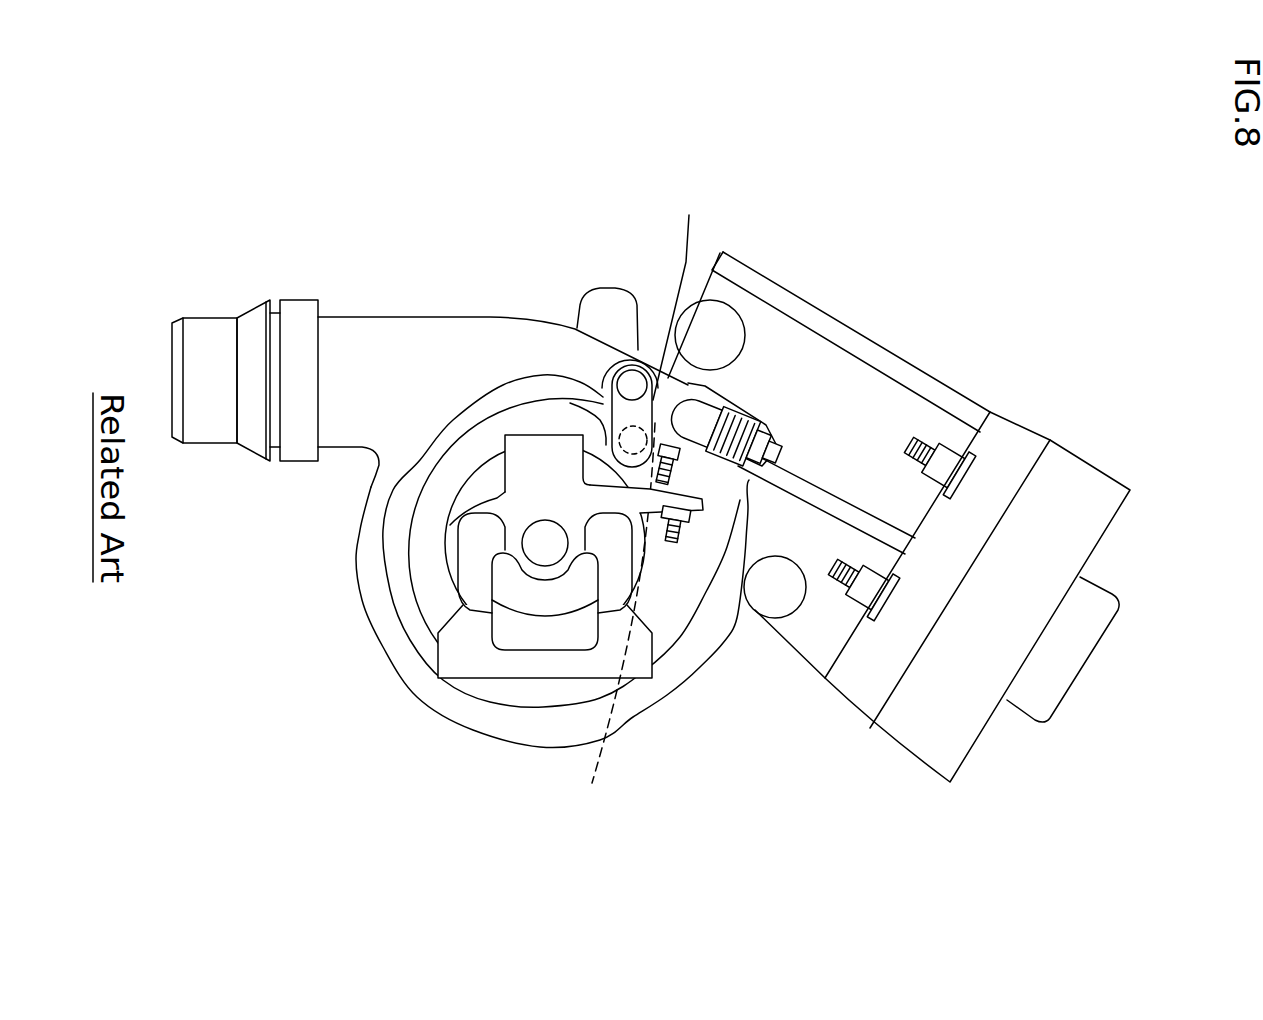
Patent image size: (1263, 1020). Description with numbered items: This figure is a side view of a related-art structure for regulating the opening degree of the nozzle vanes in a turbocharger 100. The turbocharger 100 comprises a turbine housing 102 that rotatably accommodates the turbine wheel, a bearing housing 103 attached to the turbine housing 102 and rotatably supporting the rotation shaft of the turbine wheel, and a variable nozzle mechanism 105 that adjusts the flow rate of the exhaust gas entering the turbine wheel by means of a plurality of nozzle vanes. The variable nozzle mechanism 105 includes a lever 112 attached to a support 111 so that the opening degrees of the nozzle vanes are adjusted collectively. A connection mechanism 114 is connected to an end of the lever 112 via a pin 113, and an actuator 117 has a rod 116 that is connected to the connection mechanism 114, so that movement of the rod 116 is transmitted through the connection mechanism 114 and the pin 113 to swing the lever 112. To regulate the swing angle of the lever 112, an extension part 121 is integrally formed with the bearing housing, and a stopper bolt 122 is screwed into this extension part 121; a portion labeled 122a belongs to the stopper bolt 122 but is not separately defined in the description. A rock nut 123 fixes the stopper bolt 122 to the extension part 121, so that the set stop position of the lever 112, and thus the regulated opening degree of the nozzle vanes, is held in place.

The turbocharger 100 is at (349, 208).
The turbine housing 102 is at (496, 328).
The bearing housing 103 is at (407, 594).
The variable nozzle mechanism 105 is at (948, 253).
The support 111 is at (546, 617).
The lever 112 is at (597, 385).
The pin 113 is at (642, 362).
The connection mechanism 114 is at (692, 378).
The rod 116 is at (843, 510).
The actuator 117 is at (1135, 544).
The extension part 121 is at (700, 456).
The stopper bolt 122 is at (688, 495).
The screw tip 122a is at (680, 293).
The rock nut 123 is at (670, 540).